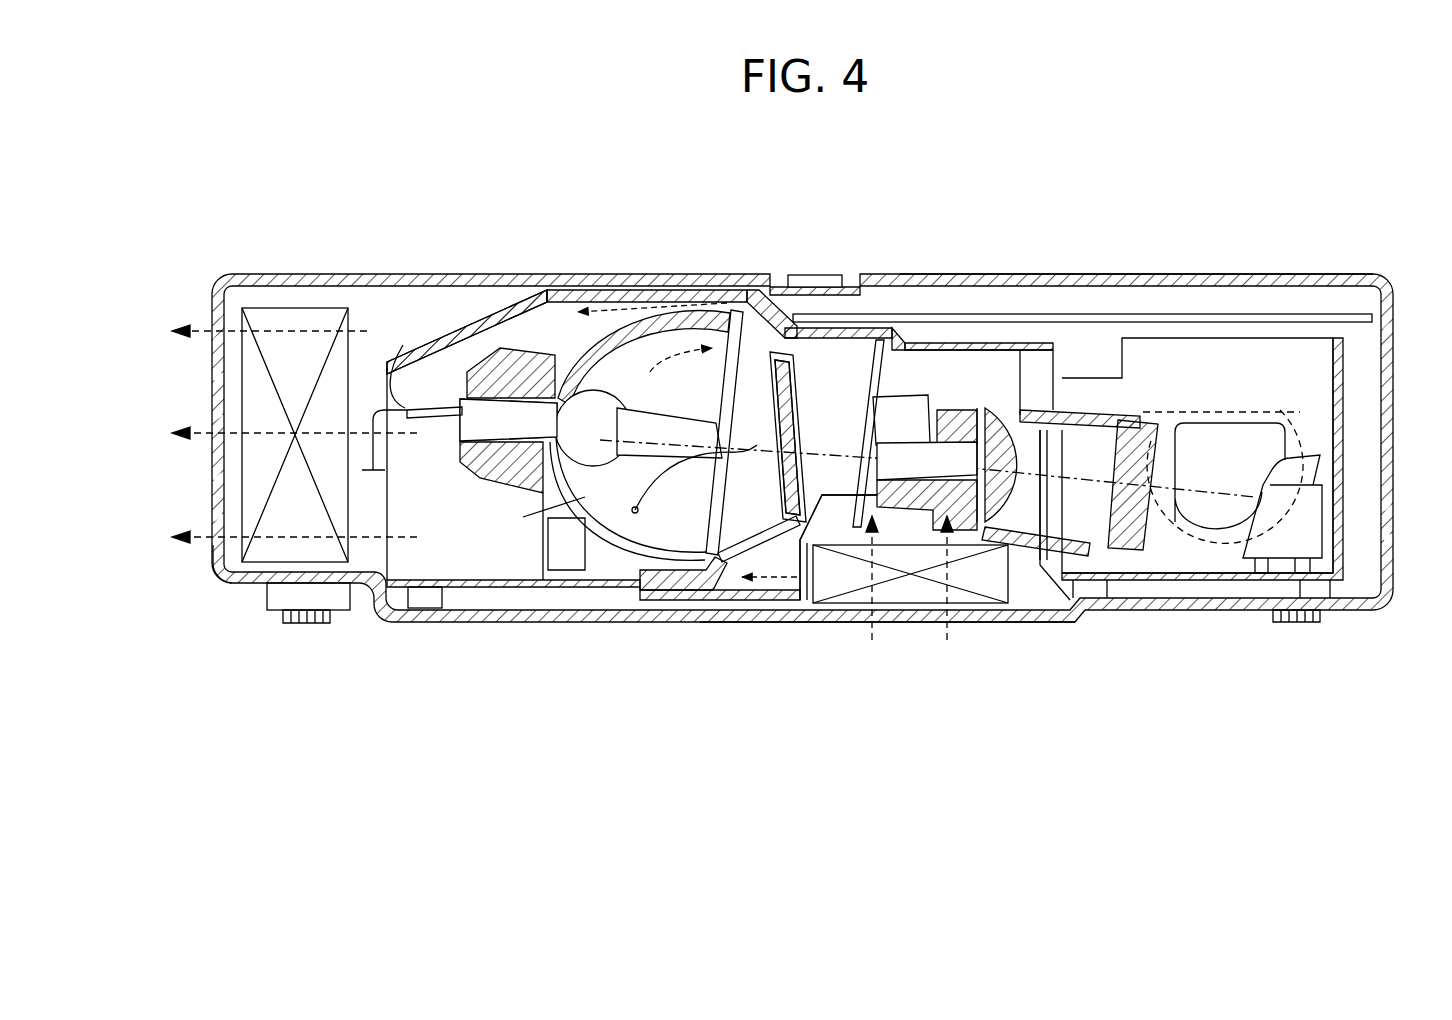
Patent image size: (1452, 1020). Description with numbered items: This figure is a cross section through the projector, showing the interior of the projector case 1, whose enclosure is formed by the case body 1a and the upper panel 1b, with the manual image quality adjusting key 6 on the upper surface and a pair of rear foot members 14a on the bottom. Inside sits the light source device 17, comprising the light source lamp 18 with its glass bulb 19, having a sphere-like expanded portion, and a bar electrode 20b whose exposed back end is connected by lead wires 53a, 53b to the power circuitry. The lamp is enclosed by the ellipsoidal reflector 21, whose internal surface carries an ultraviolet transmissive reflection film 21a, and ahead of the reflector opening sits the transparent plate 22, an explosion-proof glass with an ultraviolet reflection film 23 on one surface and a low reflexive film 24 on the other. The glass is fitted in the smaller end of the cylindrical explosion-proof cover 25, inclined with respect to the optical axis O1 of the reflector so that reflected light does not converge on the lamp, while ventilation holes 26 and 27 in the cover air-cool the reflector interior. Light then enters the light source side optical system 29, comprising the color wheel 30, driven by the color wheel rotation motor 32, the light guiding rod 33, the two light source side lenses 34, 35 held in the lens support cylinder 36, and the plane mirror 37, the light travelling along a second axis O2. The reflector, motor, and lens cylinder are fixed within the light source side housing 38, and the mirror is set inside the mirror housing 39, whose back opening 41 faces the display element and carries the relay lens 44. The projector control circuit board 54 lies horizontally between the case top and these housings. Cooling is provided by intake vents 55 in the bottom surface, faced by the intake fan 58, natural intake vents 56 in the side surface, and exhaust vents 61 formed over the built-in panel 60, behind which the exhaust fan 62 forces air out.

The projector case 1 is at (1397, 615).
The case body 1a is at (1205, 609).
The upper panel 1b is at (1087, 274).
The manual image quality adjusting key 6 is at (815, 278).
The rear foot members 14a is at (1298, 622).
The light source device 17 is at (548, 345).
The light source lamp 18 is at (617, 388).
The glass bulb 19 is at (662, 434).
The bar electrode 20b is at (427, 420).
The reflector 21 is at (600, 537).
The ultraviolet transmissive reflection film 21a is at (523, 515).
The transparent plate 22 is at (799, 392).
The ultraviolet reflection film 23 is at (797, 422).
The low reflexive film 24 is at (800, 360).
The explosion-proof cover 25 is at (758, 567).
The ventilation hole 26 is at (730, 562).
The ventilation hole 27 is at (735, 308).
The light source side optical system 29 is at (950, 386).
The color wheel 30 is at (893, 340).
The color wheel rotation motor 32 is at (908, 420).
The light guiding rod 33 is at (957, 500).
The light source side lens 34 is at (1010, 492).
The light source side lens 35 is at (1125, 448).
The lens support cylinder 36 is at (1047, 560).
The mirror 37 is at (1260, 483).
The light source side housing 38 is at (452, 342).
The mirror housing 39 is at (1323, 350).
The opening 41 is at (1205, 430).
The relay lens 44 is at (1250, 412).
The lead wire 53a is at (672, 485).
The lead wire 53b is at (399, 361).
The projector control circuit board 54 is at (1078, 323).
The intake vents 55 is at (893, 626).
The intake vents 56 is at (1394, 520).
The intake fan 58 is at (827, 592).
The built-in panel 60 is at (213, 550).
The exhaust vents 61 is at (212, 513).
The exhaust fan 62 is at (305, 325).
The optical axis O1 is at (762, 470).
The optical axis O2 is at (990, 412).